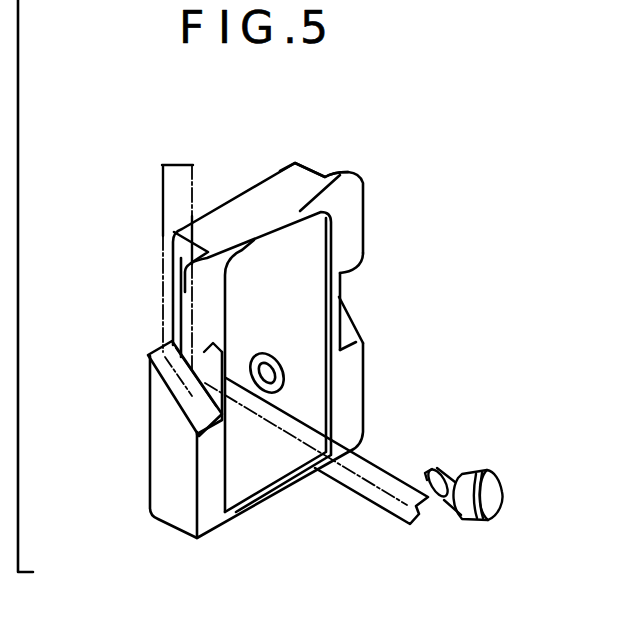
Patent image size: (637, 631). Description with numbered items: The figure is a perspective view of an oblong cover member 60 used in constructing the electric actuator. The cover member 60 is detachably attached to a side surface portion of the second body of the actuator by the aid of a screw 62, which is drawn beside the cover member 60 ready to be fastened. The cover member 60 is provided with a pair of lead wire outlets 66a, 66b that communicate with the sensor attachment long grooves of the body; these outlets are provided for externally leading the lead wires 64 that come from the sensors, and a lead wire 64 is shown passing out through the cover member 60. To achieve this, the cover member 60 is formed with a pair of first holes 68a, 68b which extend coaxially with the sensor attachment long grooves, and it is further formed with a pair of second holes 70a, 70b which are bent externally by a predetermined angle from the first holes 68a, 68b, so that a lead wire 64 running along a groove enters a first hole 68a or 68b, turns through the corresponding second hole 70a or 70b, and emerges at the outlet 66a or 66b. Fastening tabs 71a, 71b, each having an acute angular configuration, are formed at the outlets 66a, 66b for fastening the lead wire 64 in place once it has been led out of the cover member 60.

The cover member 60 is at (371, 210).
The screw 62 is at (498, 476).
The lead wires 64 is at (362, 497).
The lead wire outlet 66a is at (203, 420).
The lead wire outlet 66b is at (358, 337).
The first hole 68a is at (175, 232).
The first hole 68b is at (304, 168).
The second hole 70a is at (207, 383).
The second hole 70b is at (341, 293).
The fastening tab 71a is at (230, 350).
The fastening tab 71b is at (352, 268).